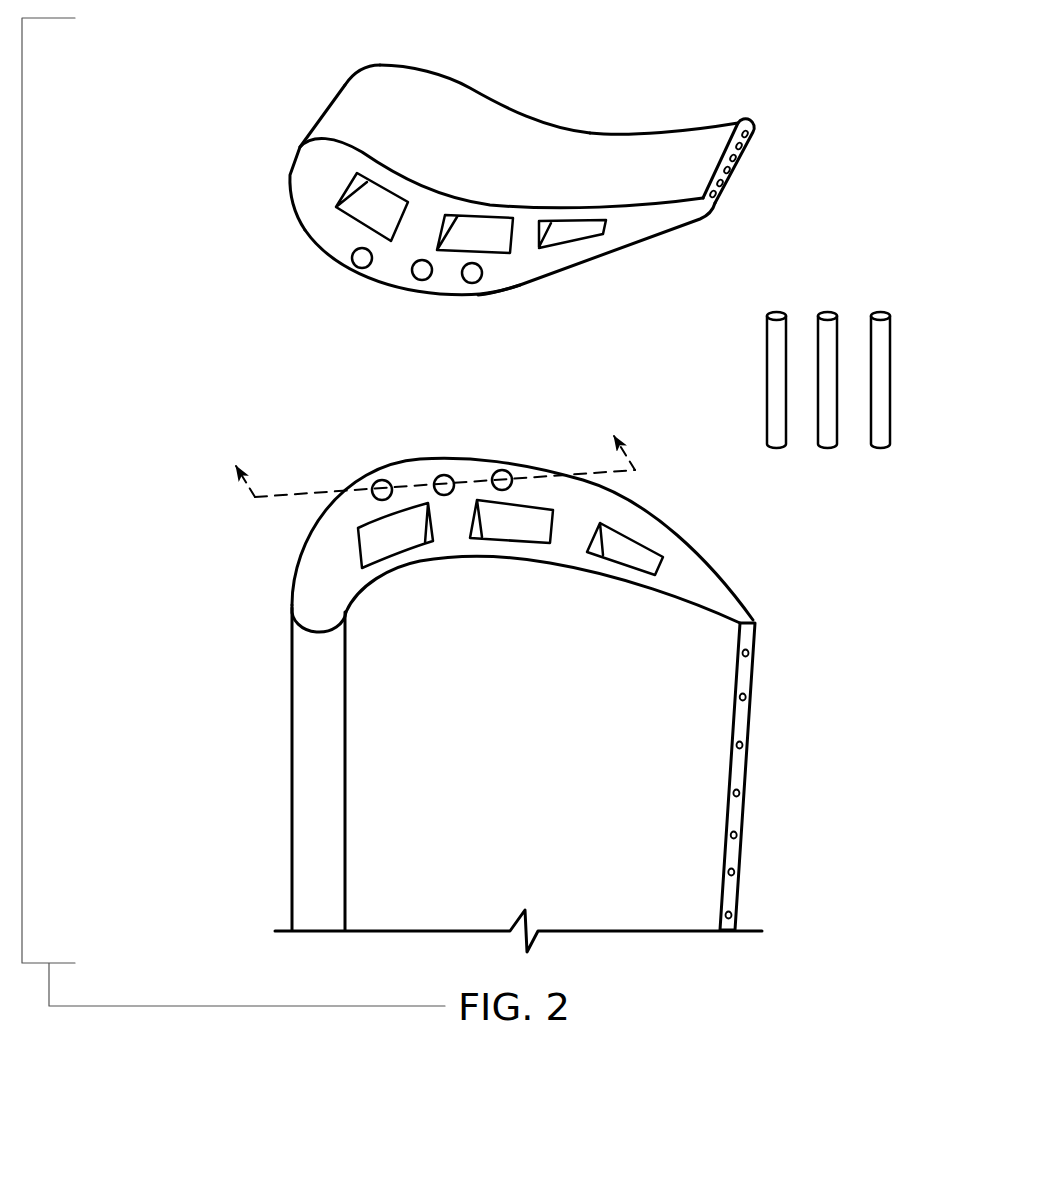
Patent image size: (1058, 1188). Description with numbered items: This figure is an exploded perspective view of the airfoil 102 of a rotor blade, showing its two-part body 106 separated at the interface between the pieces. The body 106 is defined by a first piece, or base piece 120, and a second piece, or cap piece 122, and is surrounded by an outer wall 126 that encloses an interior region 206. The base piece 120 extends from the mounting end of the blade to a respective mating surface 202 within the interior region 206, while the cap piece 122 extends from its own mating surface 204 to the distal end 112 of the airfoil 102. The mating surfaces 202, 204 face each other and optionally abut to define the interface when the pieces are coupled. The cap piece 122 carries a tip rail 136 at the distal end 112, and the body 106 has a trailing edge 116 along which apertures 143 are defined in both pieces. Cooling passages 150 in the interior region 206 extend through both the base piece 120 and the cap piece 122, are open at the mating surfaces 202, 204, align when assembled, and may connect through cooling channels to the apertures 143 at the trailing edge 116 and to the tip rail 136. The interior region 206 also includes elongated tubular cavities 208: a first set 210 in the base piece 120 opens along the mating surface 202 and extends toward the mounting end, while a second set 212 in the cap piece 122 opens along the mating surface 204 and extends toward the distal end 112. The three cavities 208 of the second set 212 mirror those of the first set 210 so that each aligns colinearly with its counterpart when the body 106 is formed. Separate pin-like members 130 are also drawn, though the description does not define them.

The airfoil 102 is at (857, 273).
The body 106 is at (224, 291).
The distal end 112 is at (729, 119).
The trailing edge 116 is at (752, 154).
The first piece 120 is at (305, 750).
The second piece 122 is at (337, 118).
The outer wall 126 is at (345, 608).
The pins 130 is at (827, 447).
The tip rail 136 is at (472, 90).
The apertures 143 is at (730, 187).
The cooling passages 150 is at (570, 240).
The mating surface 202 is at (303, 567).
The mating surface 204 is at (326, 243).
The interior region 206 is at (526, 265).
The tubular cavities 208 is at (464, 279).
The first set of tubular cavities 210 is at (517, 471).
The second set of tubular cavities 212 is at (495, 284).